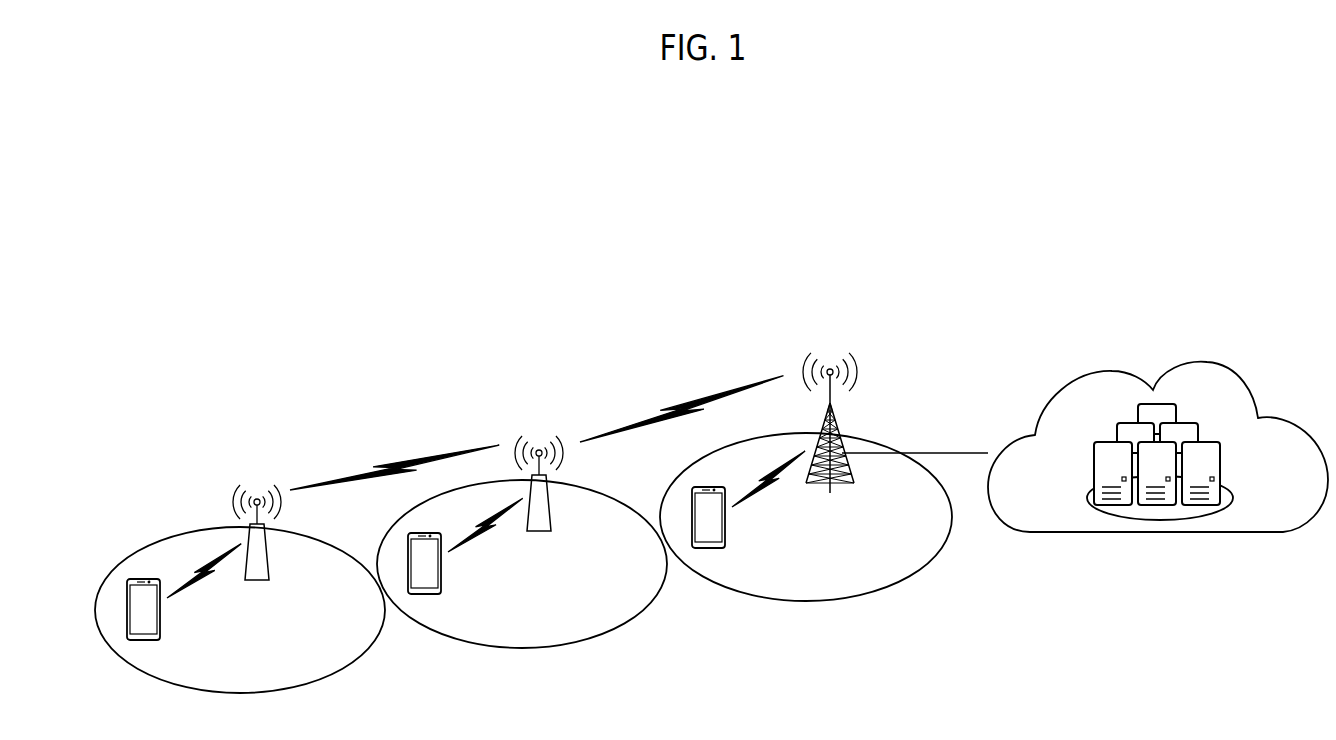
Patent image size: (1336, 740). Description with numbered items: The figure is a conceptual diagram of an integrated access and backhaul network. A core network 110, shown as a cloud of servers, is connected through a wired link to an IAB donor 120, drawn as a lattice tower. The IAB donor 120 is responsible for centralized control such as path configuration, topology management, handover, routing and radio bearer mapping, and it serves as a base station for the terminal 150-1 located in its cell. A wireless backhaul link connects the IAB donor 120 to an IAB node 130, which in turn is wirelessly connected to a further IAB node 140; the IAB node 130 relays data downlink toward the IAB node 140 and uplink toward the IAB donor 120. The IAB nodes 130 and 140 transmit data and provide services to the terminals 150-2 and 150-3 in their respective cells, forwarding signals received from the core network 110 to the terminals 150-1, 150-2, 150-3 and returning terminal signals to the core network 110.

The core network 110 is at (1107, 371).
The IAB donor 120 is at (830, 369).
The IAB node 130 is at (539, 450).
The IAB node 140 is at (257, 499).
The terminal 150-1 is at (710, 549).
The terminal 150-2 is at (427, 595).
The terminal 150-3 is at (145, 642).